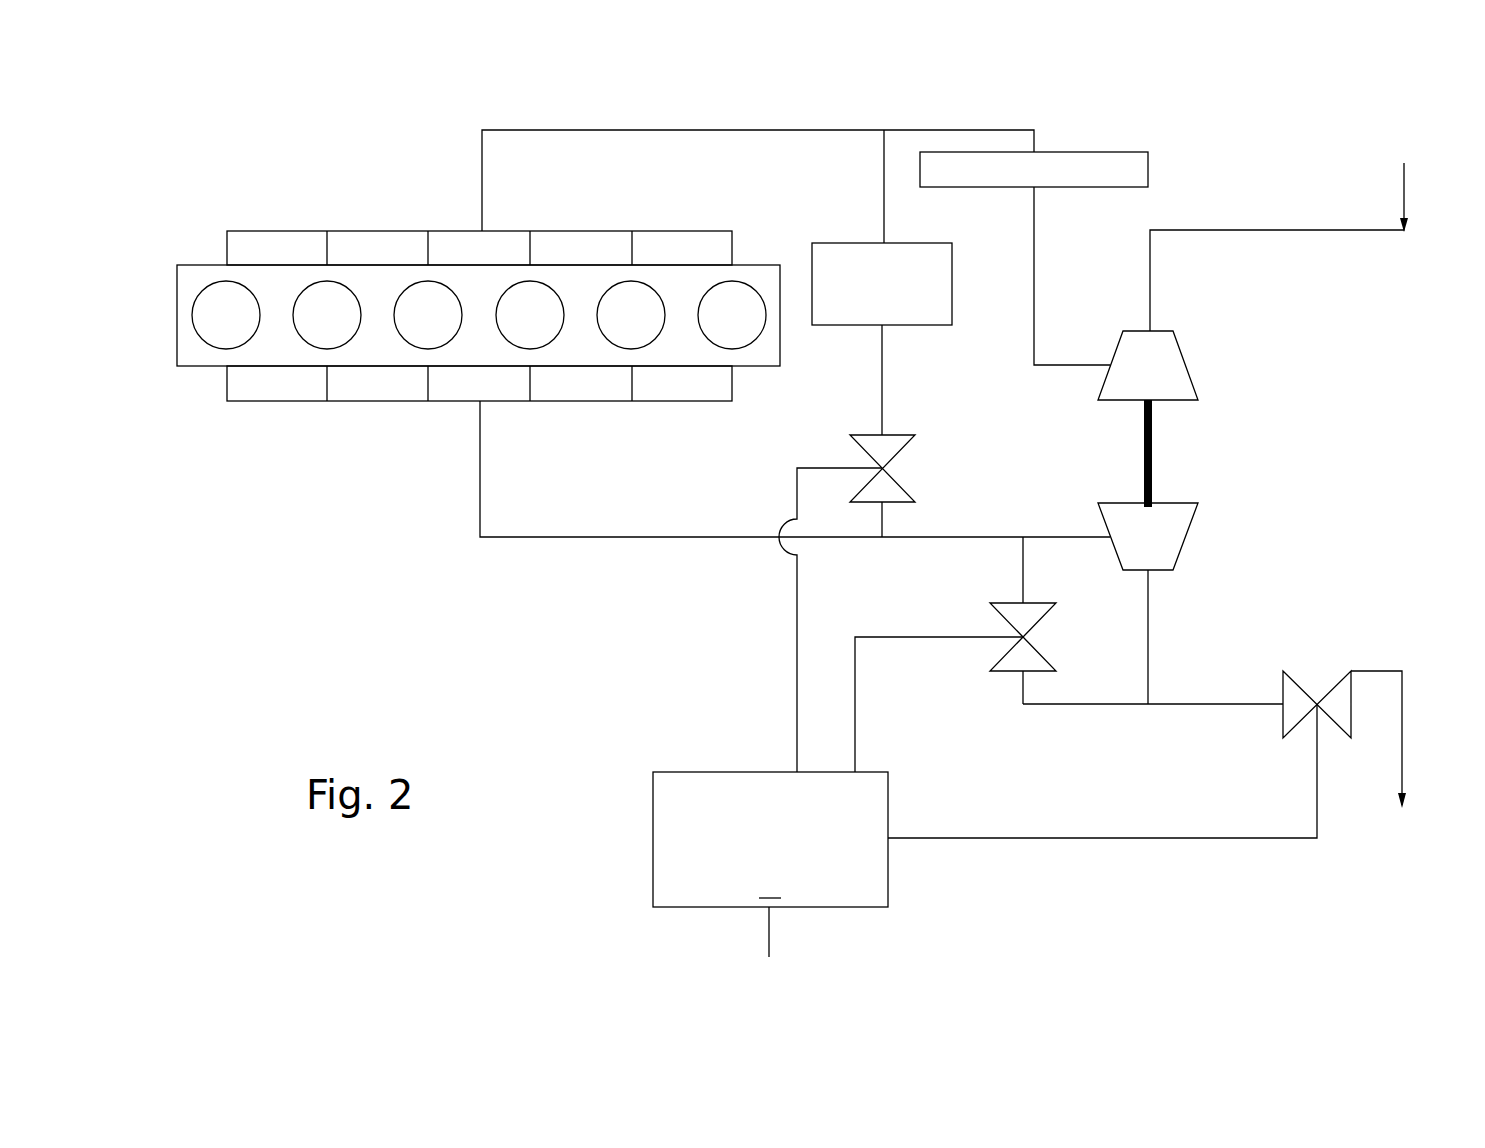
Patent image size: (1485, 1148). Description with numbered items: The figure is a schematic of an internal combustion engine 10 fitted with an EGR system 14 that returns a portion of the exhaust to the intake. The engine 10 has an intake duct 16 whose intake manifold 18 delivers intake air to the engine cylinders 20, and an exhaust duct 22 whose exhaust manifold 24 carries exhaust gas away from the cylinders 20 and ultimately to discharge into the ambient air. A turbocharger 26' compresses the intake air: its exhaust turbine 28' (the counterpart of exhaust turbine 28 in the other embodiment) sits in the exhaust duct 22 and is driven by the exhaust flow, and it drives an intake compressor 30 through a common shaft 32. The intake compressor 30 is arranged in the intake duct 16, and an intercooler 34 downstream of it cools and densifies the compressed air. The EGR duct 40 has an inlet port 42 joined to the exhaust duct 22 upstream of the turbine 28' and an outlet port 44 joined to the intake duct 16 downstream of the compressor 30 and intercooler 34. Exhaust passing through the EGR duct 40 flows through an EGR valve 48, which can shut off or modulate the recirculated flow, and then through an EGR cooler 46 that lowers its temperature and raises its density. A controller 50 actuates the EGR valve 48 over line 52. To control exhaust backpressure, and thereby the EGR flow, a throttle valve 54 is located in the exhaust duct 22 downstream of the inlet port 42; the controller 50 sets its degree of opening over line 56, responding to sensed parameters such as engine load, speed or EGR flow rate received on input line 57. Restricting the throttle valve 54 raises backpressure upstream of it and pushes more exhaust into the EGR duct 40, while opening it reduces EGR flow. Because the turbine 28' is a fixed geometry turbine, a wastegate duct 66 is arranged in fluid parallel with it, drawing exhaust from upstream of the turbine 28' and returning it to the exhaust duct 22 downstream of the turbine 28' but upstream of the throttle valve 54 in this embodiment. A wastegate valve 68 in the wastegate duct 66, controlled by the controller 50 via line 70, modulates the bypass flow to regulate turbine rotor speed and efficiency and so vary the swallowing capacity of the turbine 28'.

The internal combustion engine 10 is at (355, 138).
The EGR system 14 is at (964, 340).
The intake duct 16 is at (643, 130).
The intake manifold 18 is at (260, 240).
The engine cylinders 20 is at (203, 360).
The exhaust duct 22 is at (621, 540).
The exhaust manifold 24 is at (302, 390).
The turbocharger 26' is at (1242, 422).
The exhaust turbine 28' is at (1183, 523).
The exhaust turbine 28 is at (1199, 626).
The intake compressor 30 is at (1158, 348).
The common shaft 32 is at (1152, 452).
The intercooler 34 is at (1148, 168).
The EGR duct 40 is at (882, 348).
The inlet port 42 is at (884, 537).
The outlet port 44 is at (884, 165).
The EGR cooler 46 is at (953, 298).
The EGR valve 48 is at (897, 442).
The controller 50 is at (770, 839).
The line 52 is at (795, 697).
The throttle valve 54 is at (1352, 722).
The line 56 is at (1130, 838).
The input line 57 is at (770, 935).
The wastegate duct 66 is at (1038, 704).
The wastegate valve 68 is at (1030, 652).
The line 70 is at (855, 740).